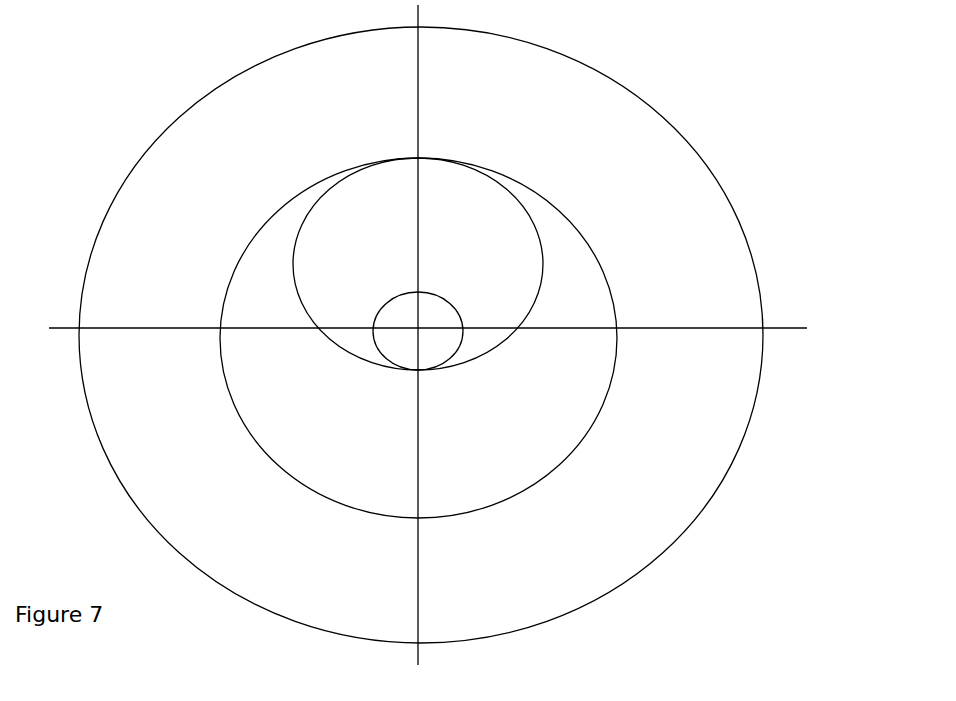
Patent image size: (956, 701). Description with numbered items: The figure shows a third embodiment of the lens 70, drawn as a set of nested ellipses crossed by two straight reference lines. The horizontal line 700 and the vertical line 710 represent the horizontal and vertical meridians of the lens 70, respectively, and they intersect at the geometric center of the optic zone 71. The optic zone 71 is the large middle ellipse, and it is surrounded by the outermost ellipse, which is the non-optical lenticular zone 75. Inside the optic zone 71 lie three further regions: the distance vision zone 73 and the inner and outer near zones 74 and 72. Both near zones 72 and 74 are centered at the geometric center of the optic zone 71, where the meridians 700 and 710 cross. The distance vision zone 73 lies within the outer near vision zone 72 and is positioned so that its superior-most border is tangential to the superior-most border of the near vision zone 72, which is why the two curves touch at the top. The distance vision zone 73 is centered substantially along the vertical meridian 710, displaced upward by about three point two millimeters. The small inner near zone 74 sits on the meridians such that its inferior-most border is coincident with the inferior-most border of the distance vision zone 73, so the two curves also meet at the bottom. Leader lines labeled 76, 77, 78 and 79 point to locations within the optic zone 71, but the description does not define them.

The lens 70 is at (730, 505).
The horizontal meridian 700 is at (788, 330).
The vertical meridian 710 is at (421, 19).
The optic zone 71 is at (617, 305).
The outer near zone 72 is at (517, 338).
The distance vision zone 73 is at (371, 249).
The inner near zone 74 is at (429, 317).
The non-optical lenticular zone 75 is at (443, 335).
The first point in inner region 76 is at (447, 243).
The second point in inner region 77 is at (469, 243).
The point on inner region boundary 78 is at (536, 272).
The point in intermediate region 79 is at (558, 292).